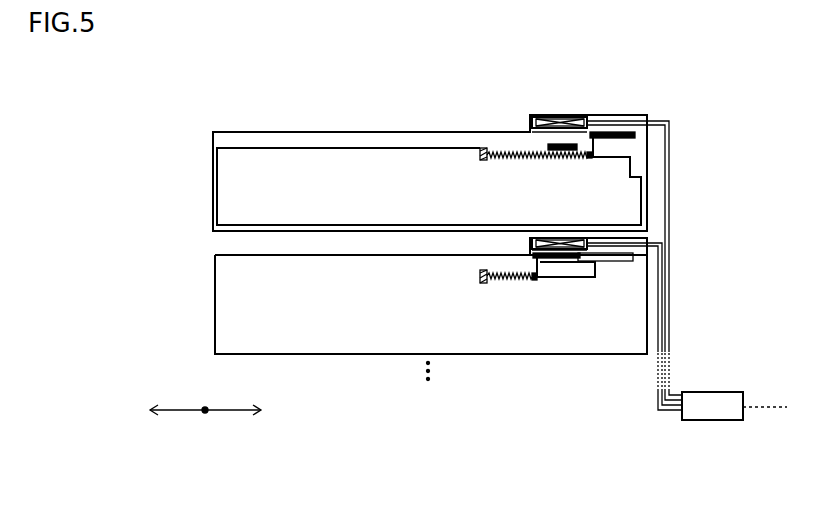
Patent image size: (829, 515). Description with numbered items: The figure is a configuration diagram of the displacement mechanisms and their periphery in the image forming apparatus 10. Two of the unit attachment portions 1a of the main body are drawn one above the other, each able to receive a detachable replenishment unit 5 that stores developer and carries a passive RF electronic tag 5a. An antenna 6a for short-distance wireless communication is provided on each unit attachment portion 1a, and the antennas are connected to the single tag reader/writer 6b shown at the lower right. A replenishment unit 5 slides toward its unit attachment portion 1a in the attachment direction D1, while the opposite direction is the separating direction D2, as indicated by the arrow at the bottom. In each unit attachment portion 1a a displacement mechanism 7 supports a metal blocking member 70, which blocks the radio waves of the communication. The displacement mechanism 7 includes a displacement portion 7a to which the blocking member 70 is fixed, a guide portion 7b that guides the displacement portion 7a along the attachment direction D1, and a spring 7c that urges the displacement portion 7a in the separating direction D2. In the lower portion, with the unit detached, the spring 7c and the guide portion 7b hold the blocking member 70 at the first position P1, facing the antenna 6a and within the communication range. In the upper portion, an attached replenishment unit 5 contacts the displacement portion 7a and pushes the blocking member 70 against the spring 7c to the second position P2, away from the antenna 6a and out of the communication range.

The image forming apparatus 10 is at (118, 107).
The unit attachment portion 1a is at (216, 136).
The replenishment unit 5 is at (333, 147).
The electronic tag 5a is at (547, 144).
The displacement portion 7a is at (540, 138).
The spring 7c is at (540, 160).
The antenna 6a is at (587, 117).
The blocking member 70 is at (639, 134).
The second position P2 is at (642, 137).
The displacement mechanism 7 is at (595, 168).
The guide portion 7b is at (580, 282).
The first position P1 is at (563, 263).
The tag reader/writer 6b is at (712, 391).
The attachment direction D1 is at (281, 412).
The separating direction D2 is at (136, 412).